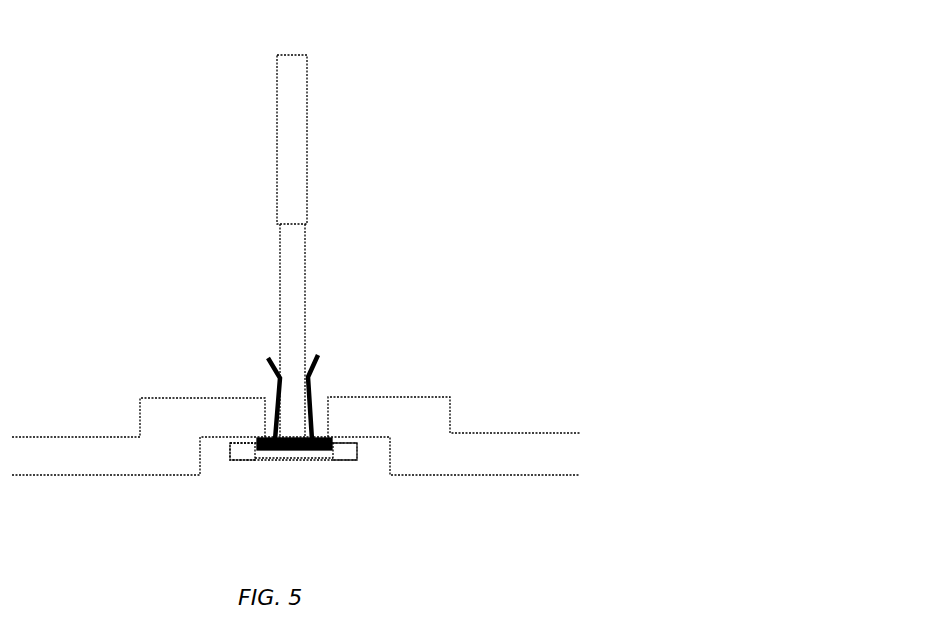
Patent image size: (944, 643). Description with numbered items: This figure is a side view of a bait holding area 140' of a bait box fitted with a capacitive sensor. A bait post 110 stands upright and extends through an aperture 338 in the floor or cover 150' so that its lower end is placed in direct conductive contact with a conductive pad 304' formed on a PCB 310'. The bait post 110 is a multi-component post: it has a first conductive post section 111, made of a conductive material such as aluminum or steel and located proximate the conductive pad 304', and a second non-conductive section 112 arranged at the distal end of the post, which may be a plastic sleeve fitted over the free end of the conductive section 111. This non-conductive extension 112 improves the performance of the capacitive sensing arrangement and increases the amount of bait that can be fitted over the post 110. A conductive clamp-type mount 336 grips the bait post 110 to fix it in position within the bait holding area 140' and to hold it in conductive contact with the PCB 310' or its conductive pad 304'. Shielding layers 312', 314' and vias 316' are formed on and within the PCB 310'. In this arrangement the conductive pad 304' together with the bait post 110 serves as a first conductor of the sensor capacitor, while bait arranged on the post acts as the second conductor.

The bait post 110 is at (217, 246).
The first conductive post section 111 is at (282, 302).
The second non-conductive section 112 is at (277, 137).
The bait holding area 140' is at (308, 309).
The floor or cover 150' is at (308, 420).
The conductive clamp-type mount 336 is at (317, 373).
The aperture 338 is at (266, 391).
The PCB 310' is at (260, 494).
The shielding layer 312' is at (197, 491).
The shielding layer 314' is at (293, 503).
The conductive pad 304' is at (325, 500).
The vias 316' is at (389, 477).